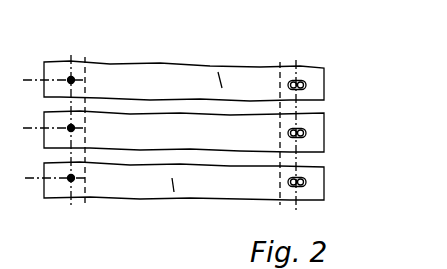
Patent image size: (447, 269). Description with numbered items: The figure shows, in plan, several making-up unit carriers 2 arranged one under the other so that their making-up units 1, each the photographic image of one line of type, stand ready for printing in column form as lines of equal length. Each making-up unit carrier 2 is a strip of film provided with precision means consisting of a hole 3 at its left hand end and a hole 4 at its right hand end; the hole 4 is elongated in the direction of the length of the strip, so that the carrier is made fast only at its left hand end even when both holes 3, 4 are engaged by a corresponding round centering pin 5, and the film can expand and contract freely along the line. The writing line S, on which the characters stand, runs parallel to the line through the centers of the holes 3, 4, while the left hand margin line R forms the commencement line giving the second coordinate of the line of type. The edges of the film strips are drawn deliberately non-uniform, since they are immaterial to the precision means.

The making-up unit 1 is at (132, 75).
The making-up unit carrier 2 is at (52, 85).
The hole 3 is at (68, 130).
The elongated hole 4 is at (302, 80).
The centering pin 5 is at (307, 130).
The left hand margin line R is at (87, 58).
The writing line S is at (219, 74).